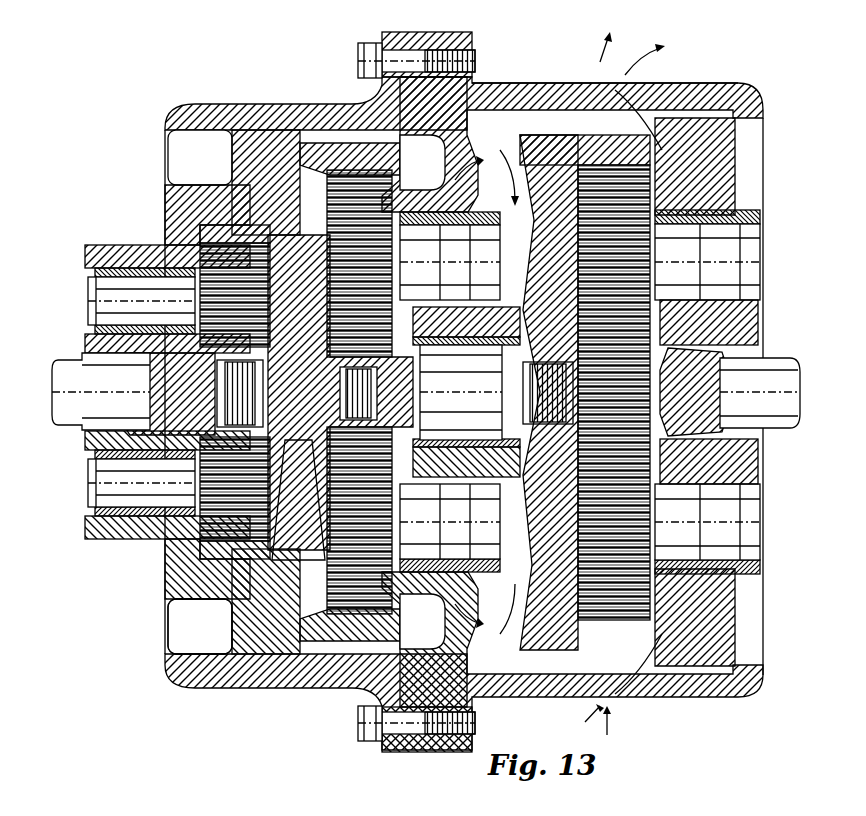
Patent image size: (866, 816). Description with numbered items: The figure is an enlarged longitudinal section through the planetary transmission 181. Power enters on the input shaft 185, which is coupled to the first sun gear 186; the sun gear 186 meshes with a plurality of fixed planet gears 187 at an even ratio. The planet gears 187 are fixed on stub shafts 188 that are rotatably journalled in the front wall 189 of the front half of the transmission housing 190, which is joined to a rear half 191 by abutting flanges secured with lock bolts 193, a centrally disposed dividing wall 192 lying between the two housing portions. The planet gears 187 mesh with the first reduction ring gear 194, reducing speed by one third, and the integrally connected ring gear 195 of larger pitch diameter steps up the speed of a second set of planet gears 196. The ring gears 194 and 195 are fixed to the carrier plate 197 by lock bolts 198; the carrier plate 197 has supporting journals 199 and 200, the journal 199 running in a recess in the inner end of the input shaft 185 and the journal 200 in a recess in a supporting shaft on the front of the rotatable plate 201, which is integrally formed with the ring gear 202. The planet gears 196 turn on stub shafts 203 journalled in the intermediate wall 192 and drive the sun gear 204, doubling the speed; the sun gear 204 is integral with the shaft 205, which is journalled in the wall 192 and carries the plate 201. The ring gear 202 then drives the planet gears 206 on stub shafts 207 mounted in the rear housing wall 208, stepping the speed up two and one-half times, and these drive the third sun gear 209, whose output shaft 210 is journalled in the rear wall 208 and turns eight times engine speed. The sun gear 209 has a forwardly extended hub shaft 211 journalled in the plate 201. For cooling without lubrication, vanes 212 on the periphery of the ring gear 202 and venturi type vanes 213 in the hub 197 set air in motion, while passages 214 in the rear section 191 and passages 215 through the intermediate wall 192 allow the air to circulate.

The transmission 181 is at (158, 563).
The input shaft 185 is at (120, 392).
The sun gear 186 is at (167, 394).
The planet gears 187 is at (193, 262).
The stub shafts 188 is at (88, 299).
The front wall 189 is at (125, 266).
The transmission housing 190 is at (280, 100).
The rear half 191 is at (492, 86).
The dividing wall 192 is at (412, 33).
The lock bolts 193 is at (362, 45).
The first reduction ring gear 194 is at (235, 226).
The ring gear 195 is at (372, 170).
The planet gears 196 is at (406, 178).
The carrier plate 197 is at (307, 404).
The lock bolts 198 is at (232, 612).
The supporting journal 199 is at (218, 392).
The supporting journal 200 is at (420, 402).
The rotatable plate 201 is at (556, 443).
The ring gear 202 is at (615, 160).
The stub shafts 203 is at (450, 248).
The sun gear 204 is at (420, 378).
The shaft 205 is at (473, 396).
The planet gears 206 is at (600, 392).
The stub shaft 207 is at (732, 243).
The rear transmission housing wall 208 is at (708, 630).
The sun gear 209 is at (663, 392).
The output shaft 210 is at (802, 388).
The supporting hub shaft 211 is at (566, 368).
The vanes 212 is at (675, 150).
The venturi type vanes 213 is at (312, 520).
The passages 214 is at (622, 80).
The passages 215 is at (462, 185).